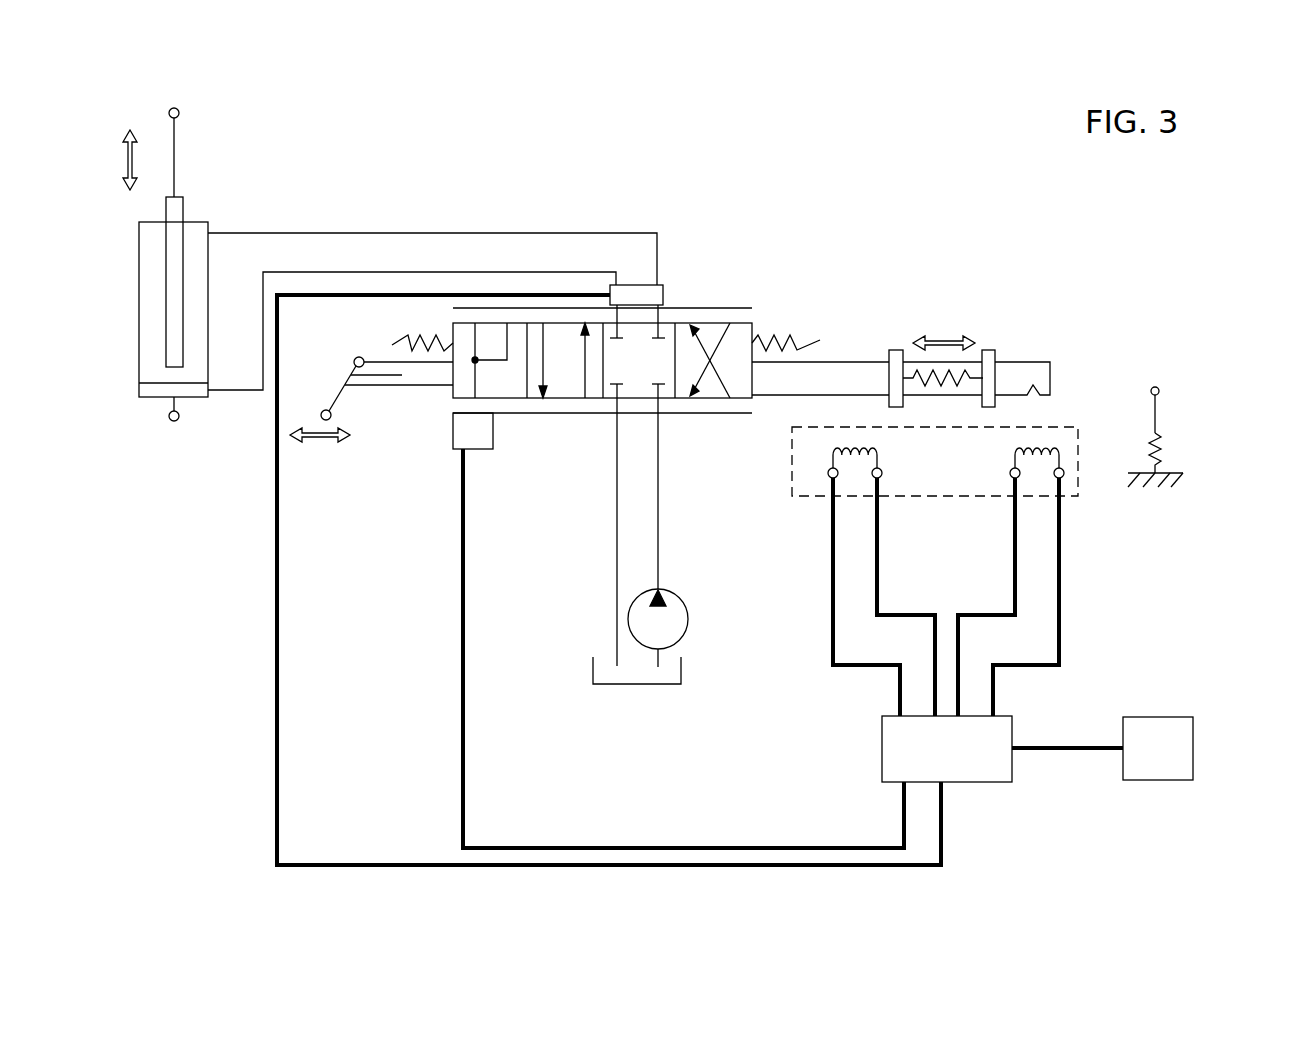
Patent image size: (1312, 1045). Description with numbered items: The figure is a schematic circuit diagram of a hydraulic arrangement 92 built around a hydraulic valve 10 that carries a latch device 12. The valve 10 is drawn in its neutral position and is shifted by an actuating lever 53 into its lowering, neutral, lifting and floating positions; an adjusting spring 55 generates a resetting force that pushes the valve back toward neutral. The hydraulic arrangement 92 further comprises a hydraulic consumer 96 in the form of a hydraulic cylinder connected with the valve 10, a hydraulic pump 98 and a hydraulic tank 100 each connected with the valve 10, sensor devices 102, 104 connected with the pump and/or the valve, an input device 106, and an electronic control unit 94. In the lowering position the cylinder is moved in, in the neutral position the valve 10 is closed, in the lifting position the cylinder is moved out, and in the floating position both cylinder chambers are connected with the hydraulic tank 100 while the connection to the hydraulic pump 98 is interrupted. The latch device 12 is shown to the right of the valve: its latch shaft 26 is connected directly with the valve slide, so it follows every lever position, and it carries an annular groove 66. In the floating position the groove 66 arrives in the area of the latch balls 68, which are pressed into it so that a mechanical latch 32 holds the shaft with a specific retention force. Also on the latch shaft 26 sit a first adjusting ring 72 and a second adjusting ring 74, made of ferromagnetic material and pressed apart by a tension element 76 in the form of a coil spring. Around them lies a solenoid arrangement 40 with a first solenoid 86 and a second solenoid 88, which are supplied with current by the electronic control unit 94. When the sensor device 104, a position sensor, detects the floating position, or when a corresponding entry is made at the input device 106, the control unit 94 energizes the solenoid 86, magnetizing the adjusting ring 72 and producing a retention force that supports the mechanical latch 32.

The hydraulic valve 10 is at (746, 292).
The latch device 12 is at (1056, 350).
The latch shaft 26 is at (1027, 372).
The mechanical latch 32 is at (1192, 459).
The solenoid arrangement 40 is at (1078, 480).
The actuating lever 53 is at (345, 375).
The adjusting spring 55 is at (400, 343).
The annular groove 66 is at (1029, 397).
The latch balls 68 is at (1155, 428).
The first adjusting ring 72 is at (990, 370).
The second adjusting ring 74 is at (896, 360).
The tension element 76 is at (942, 376).
The first solenoid 86 is at (1042, 446).
The second solenoid 88 is at (848, 447).
The hydraulic arrangement 92 is at (578, 735).
The electronic control unit 94 is at (983, 782).
The hydraulic consumer 96 is at (139, 323).
The hydraulic pump 98 is at (688, 619).
The hydraulic tank 100 is at (592, 669).
The sensor device 102 is at (655, 295).
The sensor device 104 is at (480, 449).
The input device 106 is at (1160, 717).